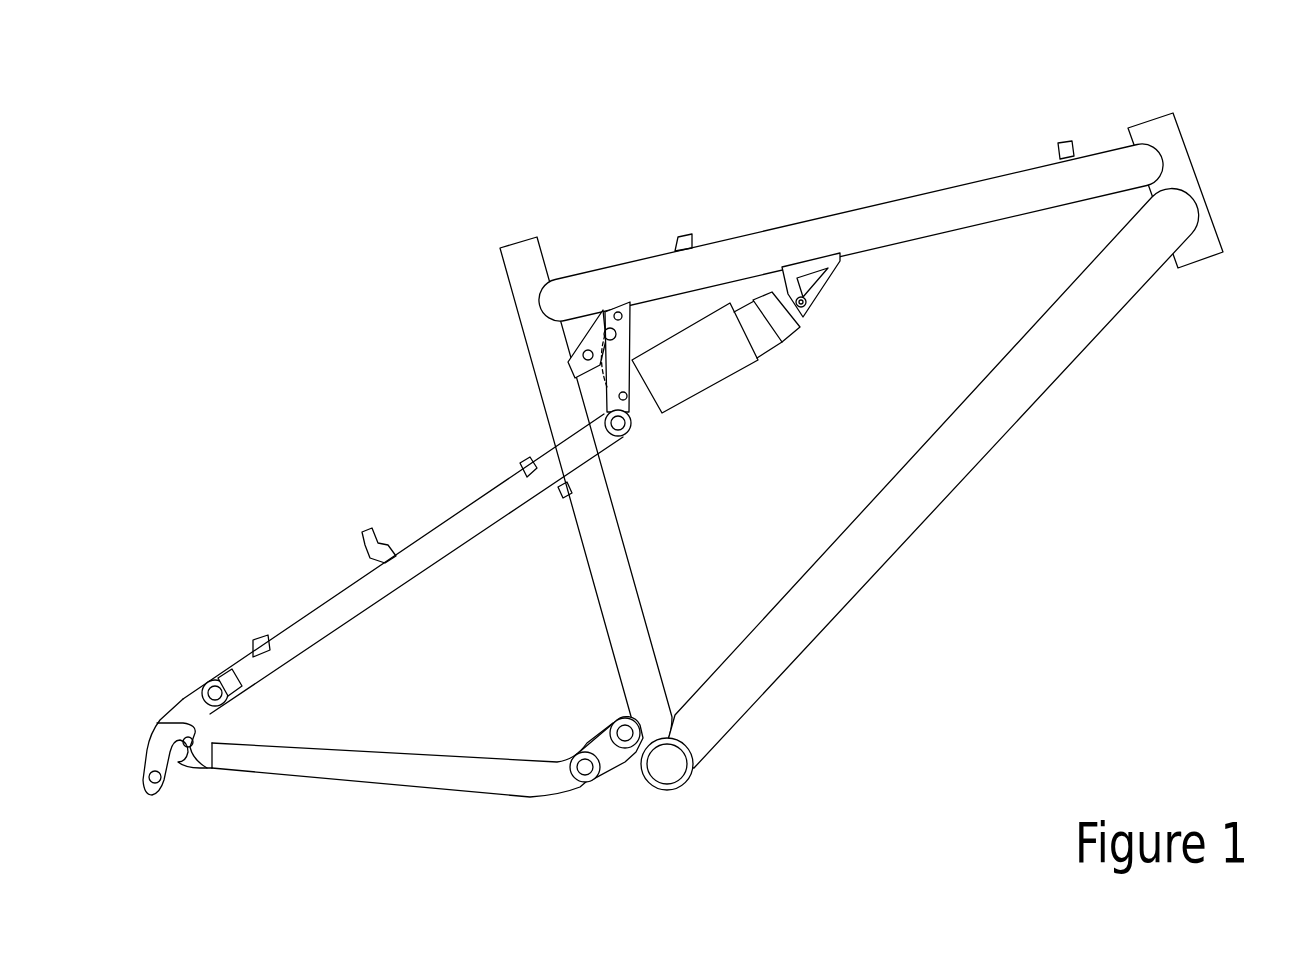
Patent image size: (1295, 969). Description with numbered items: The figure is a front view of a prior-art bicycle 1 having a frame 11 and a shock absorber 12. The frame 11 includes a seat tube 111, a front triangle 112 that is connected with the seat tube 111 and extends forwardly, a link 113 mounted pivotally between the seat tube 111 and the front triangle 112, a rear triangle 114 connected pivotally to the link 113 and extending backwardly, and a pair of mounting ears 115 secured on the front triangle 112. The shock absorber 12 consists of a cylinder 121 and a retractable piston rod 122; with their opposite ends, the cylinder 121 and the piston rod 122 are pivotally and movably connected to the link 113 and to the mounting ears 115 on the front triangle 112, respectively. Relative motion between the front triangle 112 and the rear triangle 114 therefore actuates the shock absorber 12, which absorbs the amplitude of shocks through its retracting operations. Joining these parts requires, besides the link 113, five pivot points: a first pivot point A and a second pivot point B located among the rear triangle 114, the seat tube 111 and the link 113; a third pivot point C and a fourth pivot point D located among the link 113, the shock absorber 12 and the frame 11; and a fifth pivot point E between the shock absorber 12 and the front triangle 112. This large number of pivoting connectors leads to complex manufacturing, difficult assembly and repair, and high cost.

The bicycle 1 is at (683, 476).
The frame 11 is at (890, 200).
The seat tube 111 is at (617, 613).
The front triangle 112 is at (968, 478).
The link 113 is at (606, 375).
The rear triangle 114 is at (384, 788).
The mounting ears 115 is at (792, 268).
The shock absorber 12 is at (722, 405).
The cylinder 121 is at (678, 386).
The piston rod 122 is at (767, 343).
The first pivot point A is at (613, 722).
The second pivot point B is at (622, 440).
The third pivot point C is at (606, 403).
The fourth pivot point D is at (610, 327).
The fifth pivot point E is at (818, 303).